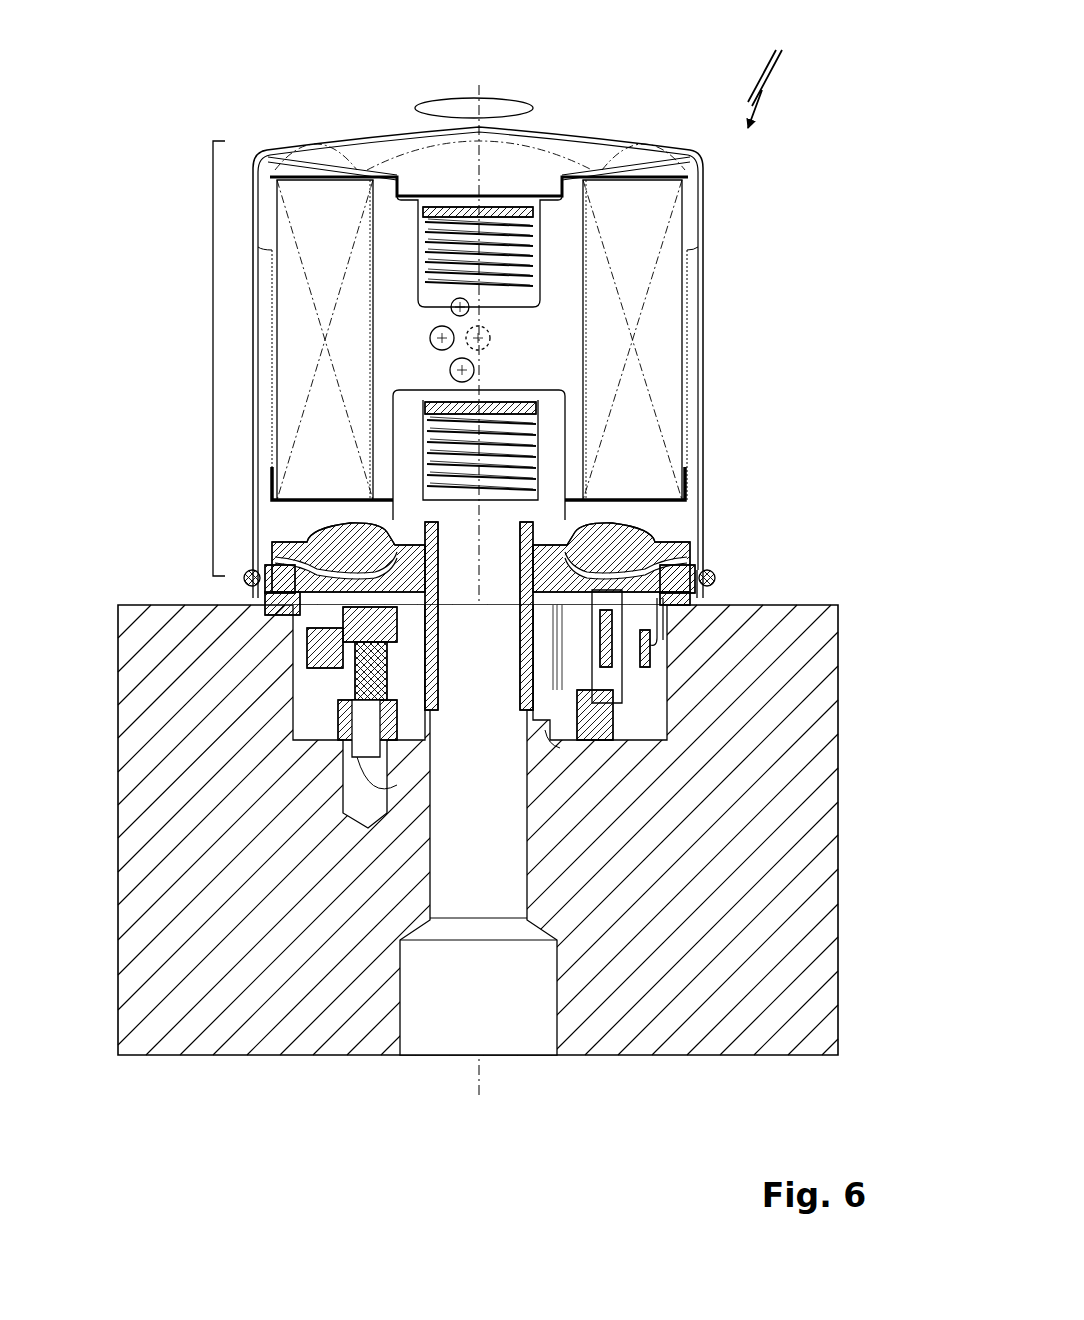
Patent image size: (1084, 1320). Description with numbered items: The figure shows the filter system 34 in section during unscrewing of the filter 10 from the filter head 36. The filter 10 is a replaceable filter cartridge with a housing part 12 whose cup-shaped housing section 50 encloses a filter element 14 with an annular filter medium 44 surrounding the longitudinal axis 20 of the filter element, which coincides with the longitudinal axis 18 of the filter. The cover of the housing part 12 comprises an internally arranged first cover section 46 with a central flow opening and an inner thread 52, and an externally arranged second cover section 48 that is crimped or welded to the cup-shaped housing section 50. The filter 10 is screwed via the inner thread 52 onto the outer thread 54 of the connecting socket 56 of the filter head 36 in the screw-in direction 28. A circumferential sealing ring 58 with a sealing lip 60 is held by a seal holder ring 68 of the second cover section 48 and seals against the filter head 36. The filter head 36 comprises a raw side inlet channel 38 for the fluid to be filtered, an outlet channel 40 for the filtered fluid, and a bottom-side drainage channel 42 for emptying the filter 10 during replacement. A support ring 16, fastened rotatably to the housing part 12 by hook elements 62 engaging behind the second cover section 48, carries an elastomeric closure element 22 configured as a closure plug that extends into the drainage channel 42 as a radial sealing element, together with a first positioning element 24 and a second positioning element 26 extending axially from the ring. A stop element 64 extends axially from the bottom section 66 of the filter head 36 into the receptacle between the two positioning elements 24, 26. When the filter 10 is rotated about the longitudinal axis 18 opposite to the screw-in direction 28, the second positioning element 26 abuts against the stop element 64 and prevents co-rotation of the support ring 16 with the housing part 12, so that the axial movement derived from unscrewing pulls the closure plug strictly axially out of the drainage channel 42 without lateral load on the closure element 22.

The filter 10 is at (722, 262).
The housing part 12 is at (707, 320).
The filter element 14 is at (695, 302).
The support ring 16 is at (373, 637).
The longitudinal axis 18 is at (479, 144).
The longitudinal axis of the filter element 20 is at (458, 113).
The closure element 22 is at (370, 672).
The first positioning element 24 is at (563, 695).
The second positioning element 26 is at (612, 695).
The screw-in direction 28 is at (530, 103).
The filter system 34 is at (778, 74).
The filter head 36 is at (687, 897).
The raw side inlet channel 38 is at (657, 680).
The outlet channel 40 is at (487, 780).
The drainage channel 42 is at (377, 782).
The filter medium 44 is at (657, 430).
The first cover section 46 is at (687, 545).
The second cover section 48 is at (632, 557).
The cup-shaped housing section 50 is at (213, 360).
The inner thread 52 is at (620, 498).
The outer thread 54 is at (417, 553).
The connecting socket 56 is at (430, 613).
The sealing ring 58 is at (710, 590).
The sealing lip 60 is at (665, 617).
The hook elements 62 is at (287, 587).
The stop element 64 is at (612, 720).
The bottom section 66 is at (563, 733).
The seal holder ring 68 is at (246, 580).